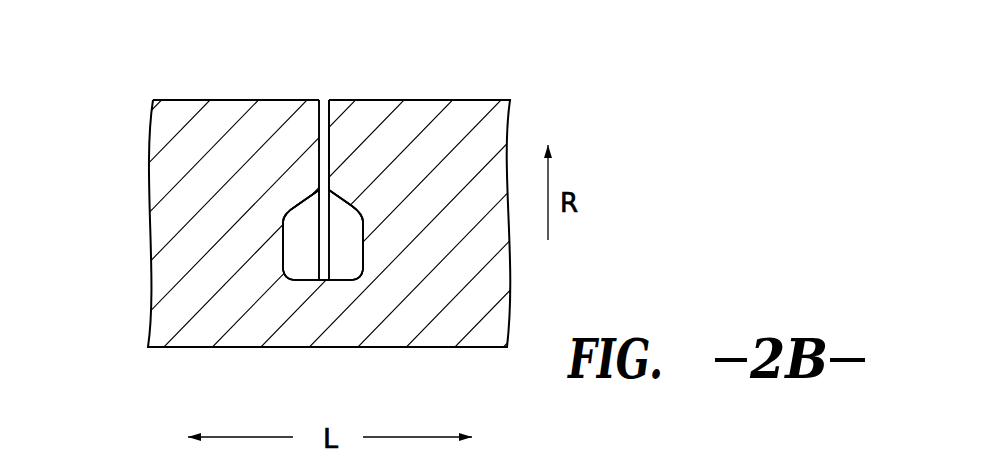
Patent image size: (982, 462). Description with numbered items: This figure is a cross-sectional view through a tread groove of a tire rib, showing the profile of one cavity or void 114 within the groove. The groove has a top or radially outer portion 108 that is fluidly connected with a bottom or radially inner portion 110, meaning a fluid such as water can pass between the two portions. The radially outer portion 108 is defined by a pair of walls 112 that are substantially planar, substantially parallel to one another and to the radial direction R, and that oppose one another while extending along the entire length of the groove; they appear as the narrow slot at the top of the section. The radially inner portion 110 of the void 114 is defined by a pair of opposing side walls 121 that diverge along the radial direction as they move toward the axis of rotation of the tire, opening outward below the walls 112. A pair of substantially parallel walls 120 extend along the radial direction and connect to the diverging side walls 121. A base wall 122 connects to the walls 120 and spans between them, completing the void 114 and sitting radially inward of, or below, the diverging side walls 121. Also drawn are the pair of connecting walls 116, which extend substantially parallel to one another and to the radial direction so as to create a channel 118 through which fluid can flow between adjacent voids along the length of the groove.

The radially outer portion 108 is at (332, 153).
The radially inner portion 110 is at (368, 212).
The walls 112 is at (316, 125).
The cavity or void 114 is at (353, 206).
The connecting walls 116 is at (317, 252).
The channel 118 is at (315, 124).
The parallel walls 120 is at (282, 245).
The side walls 121 is at (296, 201).
The base wall 122 is at (307, 283).